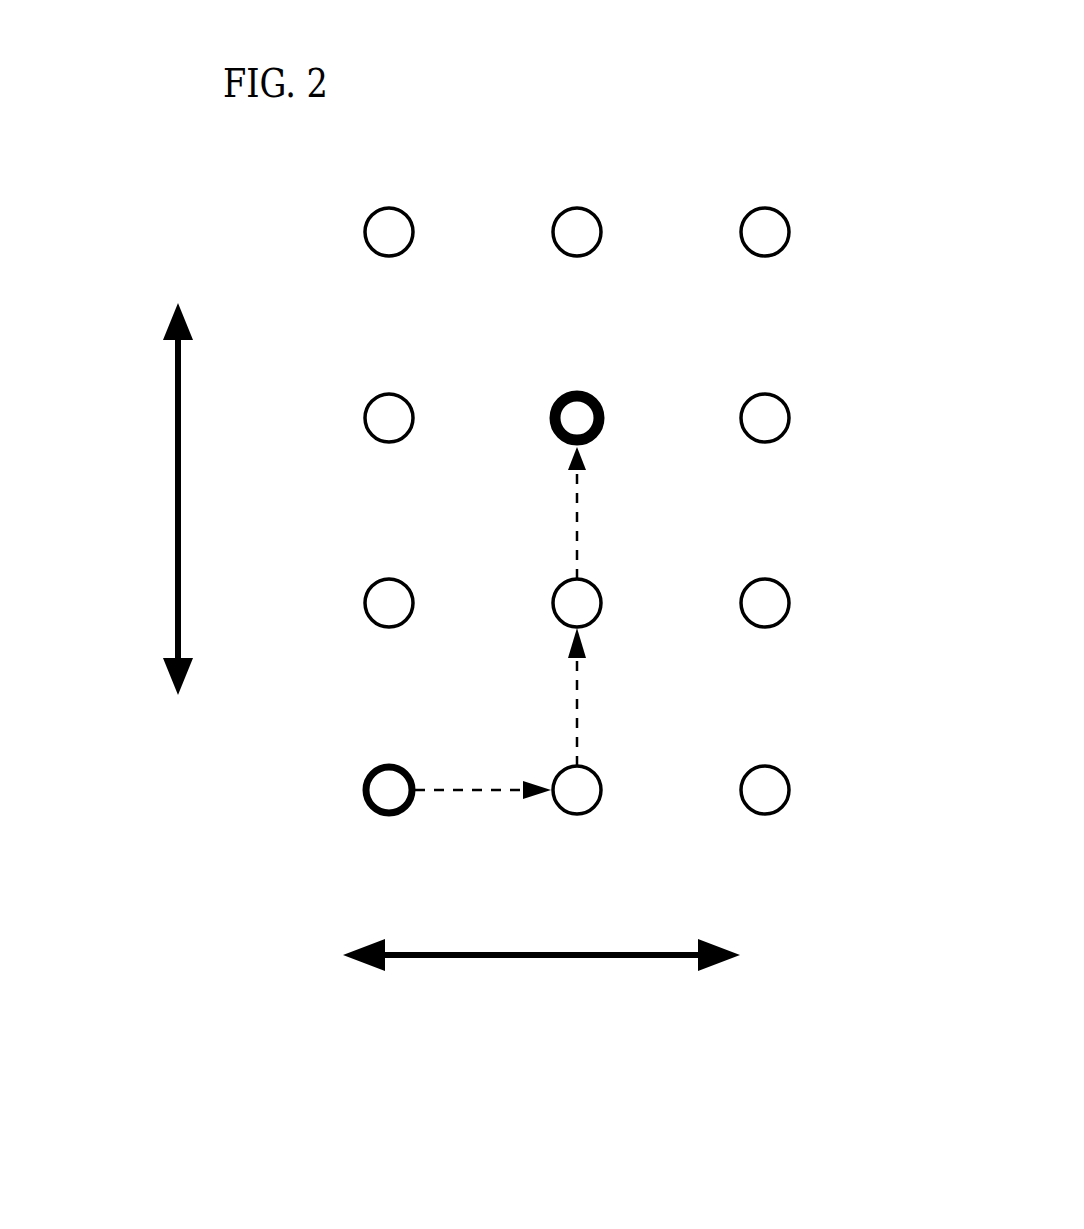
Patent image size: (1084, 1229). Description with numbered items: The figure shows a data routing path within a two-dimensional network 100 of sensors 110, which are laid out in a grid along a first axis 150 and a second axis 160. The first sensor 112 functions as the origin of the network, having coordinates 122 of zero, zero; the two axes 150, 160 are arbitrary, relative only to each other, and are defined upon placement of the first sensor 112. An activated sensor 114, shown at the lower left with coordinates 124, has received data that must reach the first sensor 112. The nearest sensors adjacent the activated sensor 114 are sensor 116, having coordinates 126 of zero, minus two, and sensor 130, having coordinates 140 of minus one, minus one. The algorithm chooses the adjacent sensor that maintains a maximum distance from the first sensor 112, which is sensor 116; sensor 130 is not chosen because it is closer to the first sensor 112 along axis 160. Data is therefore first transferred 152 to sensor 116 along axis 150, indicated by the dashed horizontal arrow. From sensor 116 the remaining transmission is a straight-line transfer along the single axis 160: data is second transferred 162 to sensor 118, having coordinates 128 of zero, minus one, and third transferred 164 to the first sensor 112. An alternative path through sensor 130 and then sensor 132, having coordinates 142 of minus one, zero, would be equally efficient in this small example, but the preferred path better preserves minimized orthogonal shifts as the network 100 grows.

The network 100 is at (636, 104).
The sensors 110 is at (788, 222).
The first sensor 112 is at (605, 425).
The activated sensor 114 is at (363, 803).
The sensor 116 is at (600, 798).
The sensor 118 is at (600, 615).
The coordinates 122 is at (618, 357).
The coordinate label -1,-2 124 is at (340, 747).
The coordinates 126 is at (630, 872).
The coordinates 128 is at (692, 603).
The sensor 130 is at (365, 615).
The sensor 132 is at (365, 411).
The coordinates 140 is at (327, 567).
The coordinates 142 is at (333, 340).
The first axis 150 is at (482, 955).
The first transfer 152 is at (502, 792).
The second axis 160 is at (175, 463).
The second transfer 162 is at (585, 668).
The third transfer 164 is at (583, 490).